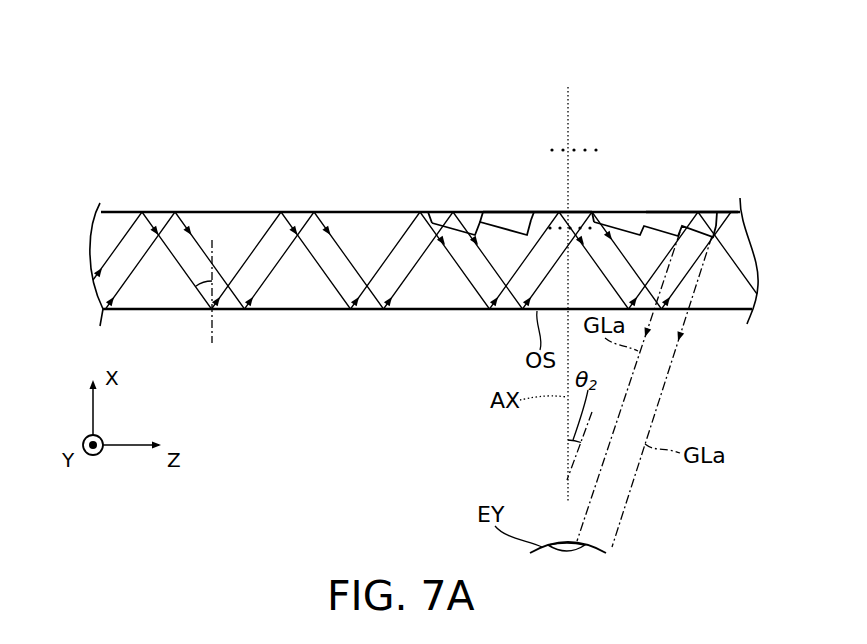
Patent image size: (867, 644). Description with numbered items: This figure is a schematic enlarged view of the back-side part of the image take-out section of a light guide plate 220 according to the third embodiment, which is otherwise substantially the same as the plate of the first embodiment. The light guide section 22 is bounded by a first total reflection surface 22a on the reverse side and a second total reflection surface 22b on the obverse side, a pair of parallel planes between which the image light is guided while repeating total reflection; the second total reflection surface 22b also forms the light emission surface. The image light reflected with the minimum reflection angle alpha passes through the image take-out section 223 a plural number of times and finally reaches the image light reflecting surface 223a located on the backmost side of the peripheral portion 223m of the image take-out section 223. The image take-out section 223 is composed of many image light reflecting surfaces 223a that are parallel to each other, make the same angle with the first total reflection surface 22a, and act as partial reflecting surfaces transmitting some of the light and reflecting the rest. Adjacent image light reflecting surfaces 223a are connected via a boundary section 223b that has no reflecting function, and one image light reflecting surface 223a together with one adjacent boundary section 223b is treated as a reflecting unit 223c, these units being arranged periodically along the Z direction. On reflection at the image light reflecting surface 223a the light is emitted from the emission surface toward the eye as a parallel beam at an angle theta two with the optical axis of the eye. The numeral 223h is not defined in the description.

The light guide plate 220 is at (236, 82).
The light guide section 22 is at (205, 216).
The first total reflection surface 22a is at (278, 212).
The second total reflection surface 22b is at (335, 312).
The image take-out section 223 is at (549, 97).
The image light reflecting surface 223a is at (435, 212).
The boundary section 223b is at (466, 212).
The reflecting unit 223c is at (431, 136).
The peripheral portion 223m is at (451, 278).
The light extraction region 223h is at (689, 285).